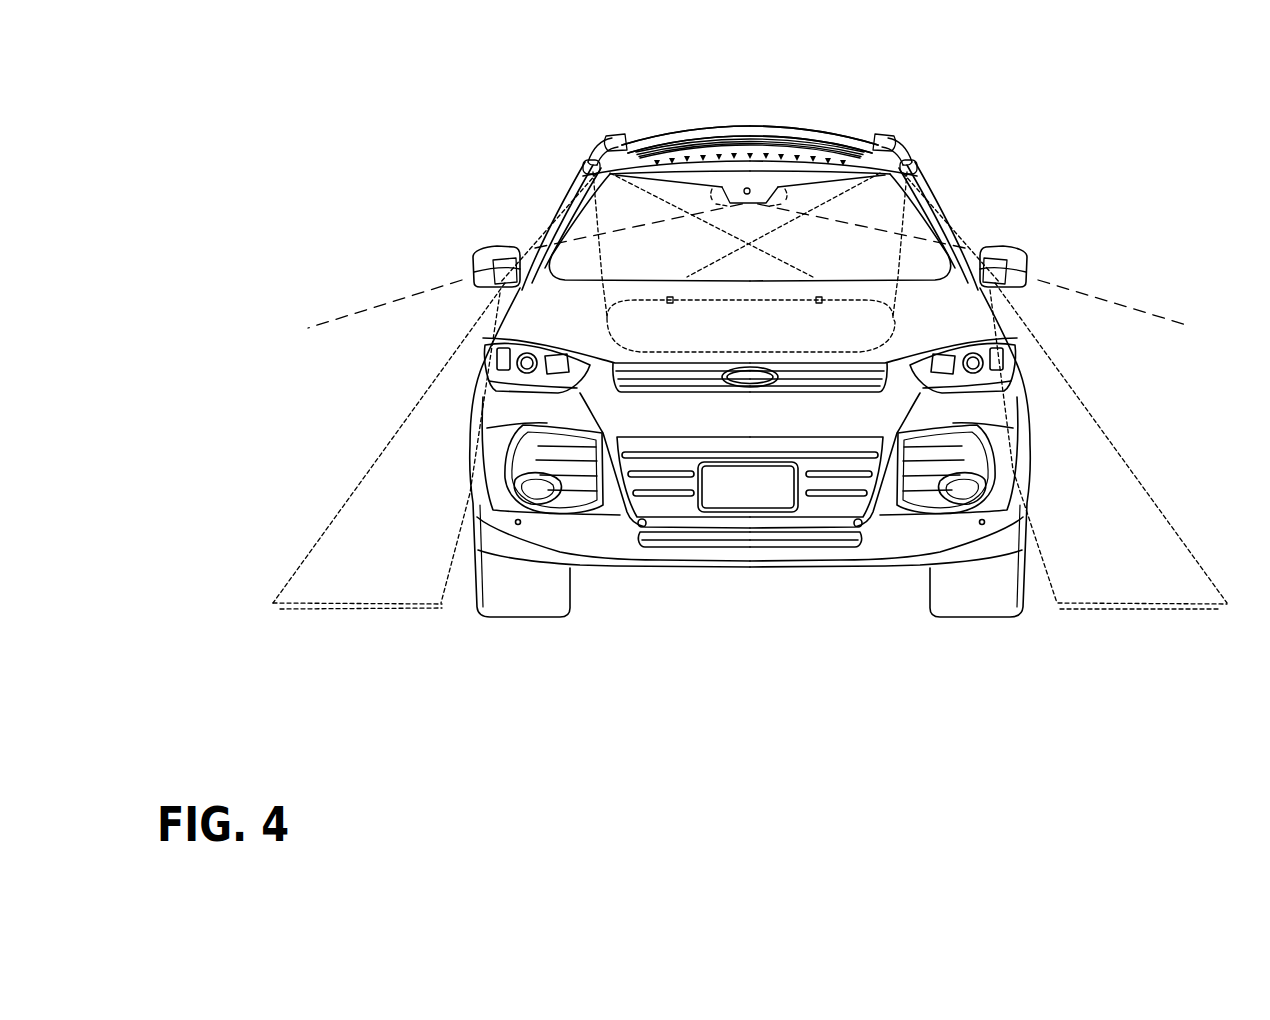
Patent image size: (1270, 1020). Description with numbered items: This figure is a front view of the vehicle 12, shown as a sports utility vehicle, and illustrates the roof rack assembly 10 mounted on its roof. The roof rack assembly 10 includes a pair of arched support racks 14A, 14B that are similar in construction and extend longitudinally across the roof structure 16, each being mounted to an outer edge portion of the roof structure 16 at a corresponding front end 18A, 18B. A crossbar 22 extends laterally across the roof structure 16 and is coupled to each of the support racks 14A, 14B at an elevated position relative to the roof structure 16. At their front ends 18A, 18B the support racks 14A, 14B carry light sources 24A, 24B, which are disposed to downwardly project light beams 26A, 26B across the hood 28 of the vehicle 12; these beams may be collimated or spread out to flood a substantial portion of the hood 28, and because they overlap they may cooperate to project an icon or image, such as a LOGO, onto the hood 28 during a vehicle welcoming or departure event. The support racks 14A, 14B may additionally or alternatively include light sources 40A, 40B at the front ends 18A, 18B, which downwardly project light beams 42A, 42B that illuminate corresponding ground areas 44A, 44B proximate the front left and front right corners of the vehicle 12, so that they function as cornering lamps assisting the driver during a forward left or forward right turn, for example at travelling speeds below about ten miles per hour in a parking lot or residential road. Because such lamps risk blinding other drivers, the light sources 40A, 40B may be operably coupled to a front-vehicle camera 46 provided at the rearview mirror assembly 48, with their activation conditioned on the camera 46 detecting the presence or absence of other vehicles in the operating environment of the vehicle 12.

The roof rack assembly 10 is at (372, 198).
The vehicle 12 is at (446, 401).
The support rack 14A is at (882, 123).
The support rack 14B is at (612, 130).
The roof structure 16 is at (788, 134).
The front end 18A is at (902, 151).
The front end 18B is at (594, 151).
The crossbar 22 is at (817, 128).
The light source 24A is at (928, 182).
The light source 24B is at (572, 180).
The light beam 26A is at (937, 215).
The light beam 26B is at (563, 215).
The hood 28 is at (657, 355).
The light source 40A is at (918, 160).
The light source 40B is at (582, 160).
The light beam 42A is at (1193, 605).
The light beam 42B is at (300, 607).
The ground area 44A is at (1113, 612).
The ground area 44B is at (372, 608).
The front-vehicle camera 46 is at (745, 188).
The rearview mirror assembly 48 is at (762, 185).